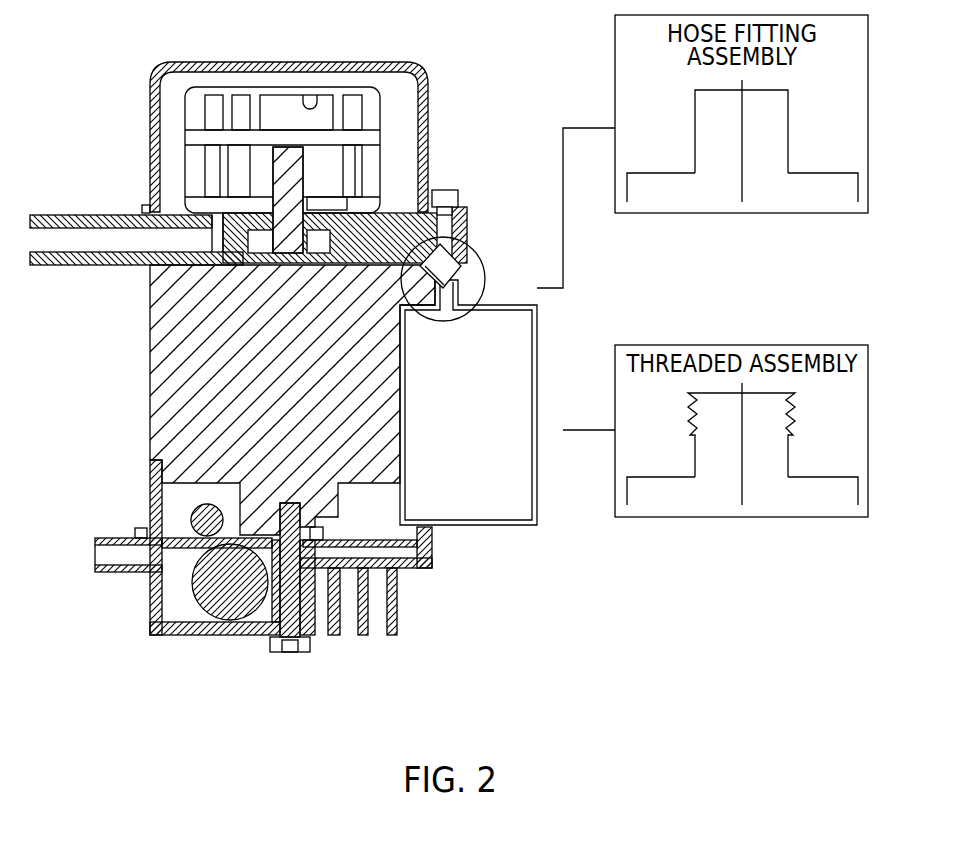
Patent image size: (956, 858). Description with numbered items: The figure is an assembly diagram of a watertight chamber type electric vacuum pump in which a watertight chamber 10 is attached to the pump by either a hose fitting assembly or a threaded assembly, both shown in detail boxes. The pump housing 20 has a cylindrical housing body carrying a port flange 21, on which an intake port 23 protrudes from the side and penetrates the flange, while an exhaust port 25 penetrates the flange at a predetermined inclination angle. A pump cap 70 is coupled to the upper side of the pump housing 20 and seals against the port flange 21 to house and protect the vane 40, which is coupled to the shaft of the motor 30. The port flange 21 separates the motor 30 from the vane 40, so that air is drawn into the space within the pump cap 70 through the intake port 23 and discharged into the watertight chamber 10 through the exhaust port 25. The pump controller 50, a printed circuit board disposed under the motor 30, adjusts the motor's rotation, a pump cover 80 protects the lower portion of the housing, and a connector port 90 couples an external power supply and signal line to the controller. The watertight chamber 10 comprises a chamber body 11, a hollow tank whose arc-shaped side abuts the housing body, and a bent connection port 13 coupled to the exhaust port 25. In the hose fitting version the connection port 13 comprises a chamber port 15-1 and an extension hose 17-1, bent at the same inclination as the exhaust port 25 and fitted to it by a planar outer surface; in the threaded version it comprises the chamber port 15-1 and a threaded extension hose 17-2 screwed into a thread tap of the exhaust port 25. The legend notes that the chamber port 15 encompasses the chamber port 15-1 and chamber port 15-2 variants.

The watertight chamber 10 is at (613, 457).
The chamber body 11 is at (523, 502).
The connection port 13 is at (447, 293).
The chamber port 15 is at (731, 702).
The chamber port 15-1 is at (828, 175).
The second flange 15-2 is at (731, 702).
The extension hose 17-1 is at (787, 120).
The threaded extension hose 17-2 is at (787, 425).
The pump housing 20 is at (150, 384).
The port flange 21 is at (386, 235).
The intake port 23 is at (70, 213).
The exhaust port 25 is at (467, 235).
The motor 30 is at (197, 430).
The vane 40 is at (373, 155).
The pump controller 50 is at (222, 598).
The pump cap 70 is at (156, 90).
The pump cover 80 is at (362, 637).
The connector port 90 is at (112, 572).